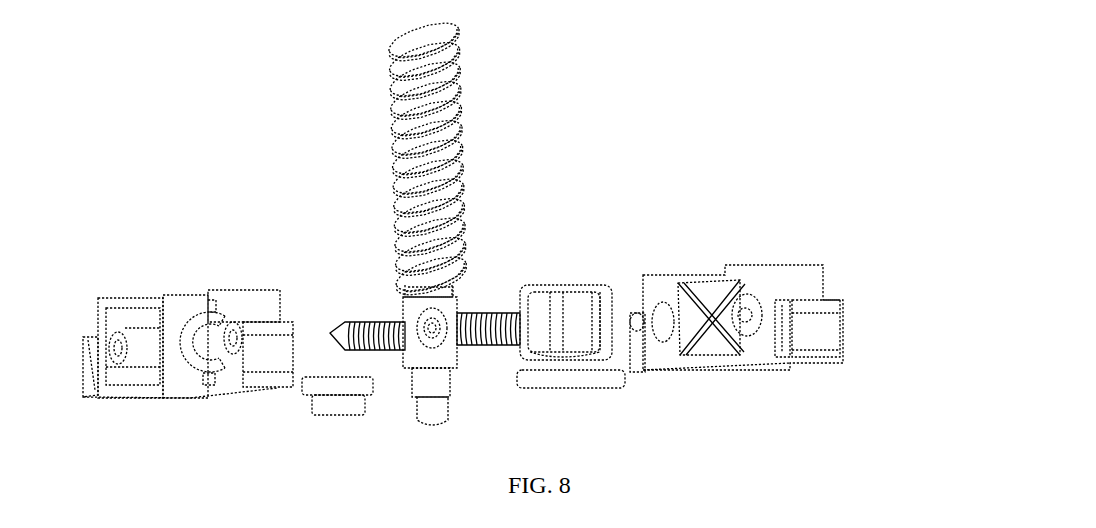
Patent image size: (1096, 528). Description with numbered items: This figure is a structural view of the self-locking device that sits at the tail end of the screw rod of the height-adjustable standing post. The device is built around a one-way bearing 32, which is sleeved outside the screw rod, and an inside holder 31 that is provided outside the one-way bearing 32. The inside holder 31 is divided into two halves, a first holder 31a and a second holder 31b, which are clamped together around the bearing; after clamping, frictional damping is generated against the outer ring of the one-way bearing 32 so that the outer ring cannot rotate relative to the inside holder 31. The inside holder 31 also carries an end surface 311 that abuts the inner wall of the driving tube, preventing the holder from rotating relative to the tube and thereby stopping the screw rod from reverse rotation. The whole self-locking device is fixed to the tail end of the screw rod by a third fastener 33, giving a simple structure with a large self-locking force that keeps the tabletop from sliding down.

The inside holder 31 is at (543, 255).
The first holder 31a is at (235, 300).
The second holder 31b is at (817, 283).
The end surface 311 is at (820, 338).
The one-way bearing 32 is at (577, 325).
The third fastener 33 is at (300, 397).